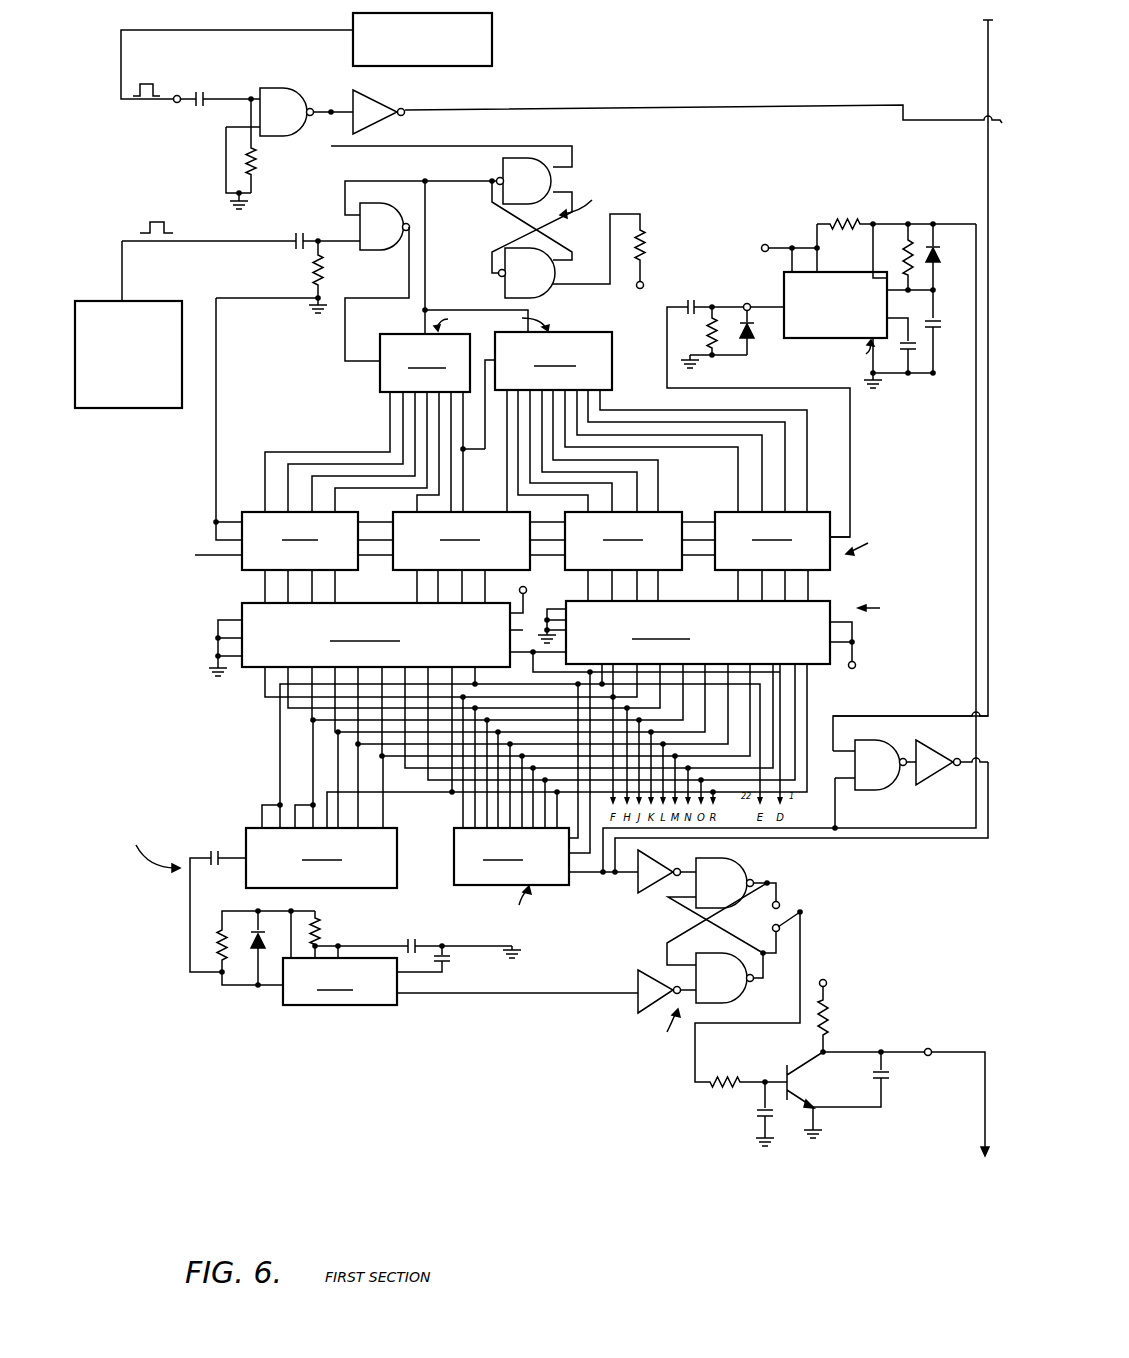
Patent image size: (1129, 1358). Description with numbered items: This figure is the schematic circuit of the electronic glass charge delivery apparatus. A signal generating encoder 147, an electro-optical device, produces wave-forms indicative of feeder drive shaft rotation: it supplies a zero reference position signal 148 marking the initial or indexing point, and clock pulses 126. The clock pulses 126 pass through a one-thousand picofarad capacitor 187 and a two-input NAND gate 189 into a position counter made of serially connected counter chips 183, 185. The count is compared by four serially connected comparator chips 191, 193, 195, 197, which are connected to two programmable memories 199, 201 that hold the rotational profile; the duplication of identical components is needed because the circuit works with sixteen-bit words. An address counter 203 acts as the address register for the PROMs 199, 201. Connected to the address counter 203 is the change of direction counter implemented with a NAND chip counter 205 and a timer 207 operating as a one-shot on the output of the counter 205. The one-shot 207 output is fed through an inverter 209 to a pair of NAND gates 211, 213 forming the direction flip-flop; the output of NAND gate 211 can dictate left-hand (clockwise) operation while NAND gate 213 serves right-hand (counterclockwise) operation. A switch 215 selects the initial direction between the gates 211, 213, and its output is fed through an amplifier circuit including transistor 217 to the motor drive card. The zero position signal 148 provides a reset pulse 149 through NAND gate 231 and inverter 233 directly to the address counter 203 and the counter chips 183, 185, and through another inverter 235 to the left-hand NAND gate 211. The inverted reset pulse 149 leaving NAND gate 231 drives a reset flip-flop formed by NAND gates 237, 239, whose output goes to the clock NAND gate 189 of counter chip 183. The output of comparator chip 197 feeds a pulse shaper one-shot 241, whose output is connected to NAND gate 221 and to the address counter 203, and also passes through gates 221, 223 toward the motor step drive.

The zero reference position signal 148 is at (131, 74).
The NAND gate 231 is at (298, 93).
The inverter 233 is at (372, 99).
The reset pulse 149 is at (655, 88).
The NAND gate of reset flip-flop 237 is at (534, 160).
The NAND gate of reset flip-flop 239 is at (511, 292).
The 1000 pf capacitor 187 is at (304, 211).
The two input NAND gate 189 is at (397, 201).
The clock pulses 126 is at (170, 221).
The signal generating encoder 147 is at (100, 301).
The CD 4024 counter chip 183 is at (378, 381).
The CD 4040 counter chip 185 is at (612, 332).
The pulse shaper one-shot 241 is at (784, 269).
The CD 4063 comparator chip 191 is at (242, 563).
The CD 4063 comparator chip 193 is at (401, 572).
The CD 4063 comparator chip 195 is at (690, 510).
The CD 4063 comparator chip 197 is at (828, 510).
The I2716 programmable memory (PROM) 199 is at (242, 605).
The I2716 programmable memory (PROM) 201 is at (832, 667).
The CD 4068 NAND chip counter 205 is at (355, 889).
The CD 4040 address counter 203 is at (455, 885).
The 556 timer one-shot 207 is at (283, 1008).
The inverter 235 is at (672, 851).
The NAND gate 211 is at (745, 860).
The NAND gate 213 is at (748, 1000).
The inverter 209 is at (640, 972).
The switch 215 is at (805, 916).
The transistor 217 is at (806, 1060).
The NAND gate 221 is at (867, 792).
The gate 223 is at (928, 787).